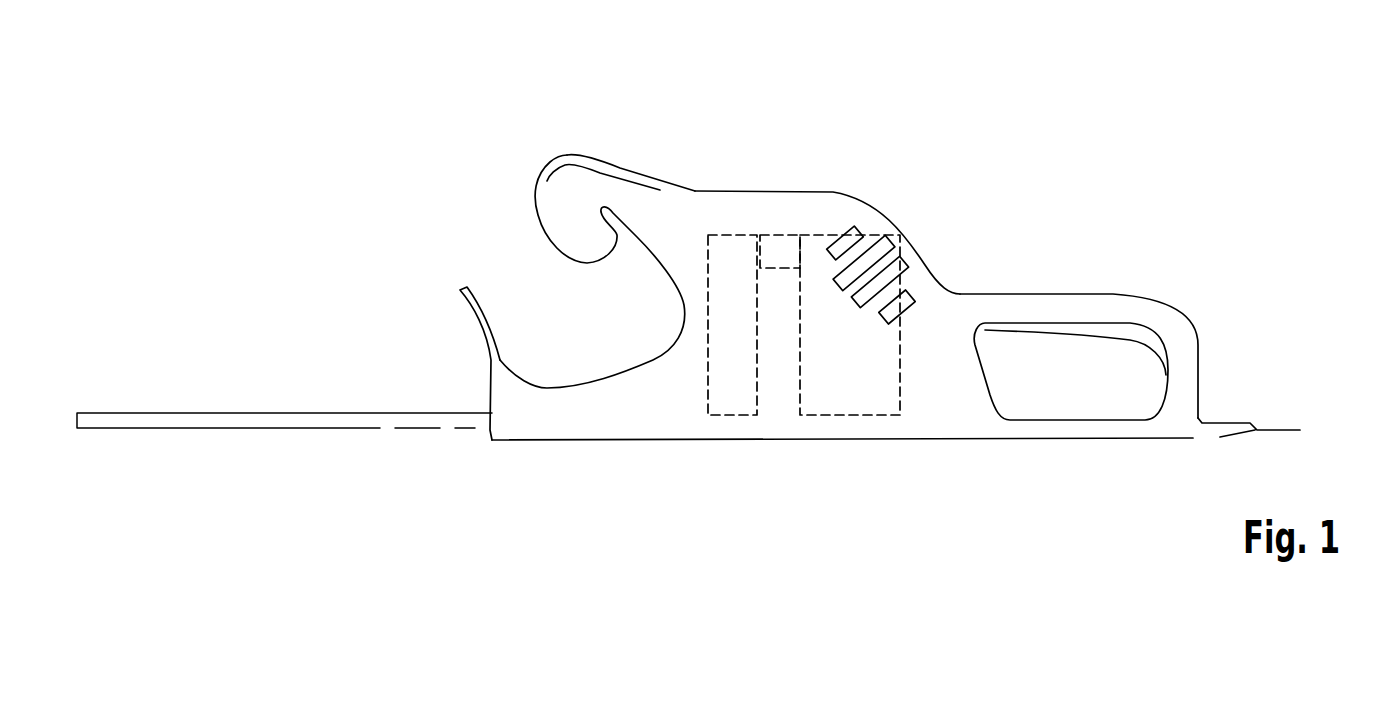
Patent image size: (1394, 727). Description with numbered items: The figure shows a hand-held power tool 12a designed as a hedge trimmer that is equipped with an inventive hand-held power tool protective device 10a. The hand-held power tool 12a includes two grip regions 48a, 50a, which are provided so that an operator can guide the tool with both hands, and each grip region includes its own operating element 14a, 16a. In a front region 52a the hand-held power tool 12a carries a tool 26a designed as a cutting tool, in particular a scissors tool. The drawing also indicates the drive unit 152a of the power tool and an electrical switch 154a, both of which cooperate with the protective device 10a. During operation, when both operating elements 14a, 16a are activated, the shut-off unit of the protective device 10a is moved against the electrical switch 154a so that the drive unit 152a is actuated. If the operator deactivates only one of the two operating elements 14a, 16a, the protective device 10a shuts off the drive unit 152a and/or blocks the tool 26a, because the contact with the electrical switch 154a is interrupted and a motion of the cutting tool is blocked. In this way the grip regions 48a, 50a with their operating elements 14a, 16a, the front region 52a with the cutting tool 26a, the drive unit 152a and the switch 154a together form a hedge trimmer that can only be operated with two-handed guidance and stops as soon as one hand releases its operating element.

The hand-held power tool 12a is at (1004, 152).
The operating element 14a is at (615, 165).
The grip region 48a is at (578, 202).
The front region 52a is at (463, 327).
The tool 26a is at (282, 425).
The hand-held power tool protective device 10a is at (733, 245).
The electrical switch 154a is at (779, 235).
The drive unit 152a is at (884, 237).
The grip region 50a is at (1119, 288).
The operating element 16a is at (1145, 340).